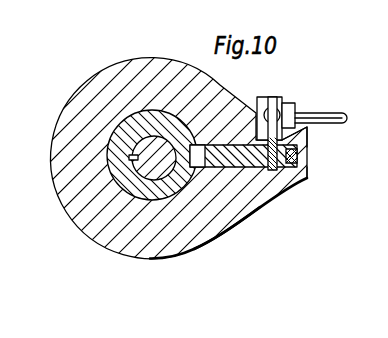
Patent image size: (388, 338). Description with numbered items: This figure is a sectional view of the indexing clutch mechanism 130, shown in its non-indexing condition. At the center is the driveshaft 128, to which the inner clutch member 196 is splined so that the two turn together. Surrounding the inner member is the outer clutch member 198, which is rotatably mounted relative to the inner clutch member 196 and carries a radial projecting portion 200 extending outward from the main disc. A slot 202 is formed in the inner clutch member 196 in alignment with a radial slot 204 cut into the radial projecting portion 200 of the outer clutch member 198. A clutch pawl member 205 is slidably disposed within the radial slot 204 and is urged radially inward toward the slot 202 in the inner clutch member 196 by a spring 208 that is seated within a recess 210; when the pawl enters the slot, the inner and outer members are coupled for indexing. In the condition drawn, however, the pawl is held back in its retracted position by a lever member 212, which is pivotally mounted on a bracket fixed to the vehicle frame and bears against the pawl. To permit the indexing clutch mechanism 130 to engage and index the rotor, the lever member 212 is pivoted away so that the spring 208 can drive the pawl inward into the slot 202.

The driveshaft 128 is at (147, 152).
The indexing clutch mechanism 130 is at (227, 236).
The inner clutch member 196 is at (134, 196).
The outer clutch member 198 is at (60, 192).
The radial projecting portion 200 is at (298, 168).
The slot 202 is at (200, 144).
The radial slot 204 is at (237, 172).
The plunger 205 is at (261, 169).
The spring 208 is at (290, 154).
The recess 210 is at (308, 140).
The lever member 212 is at (270, 112).